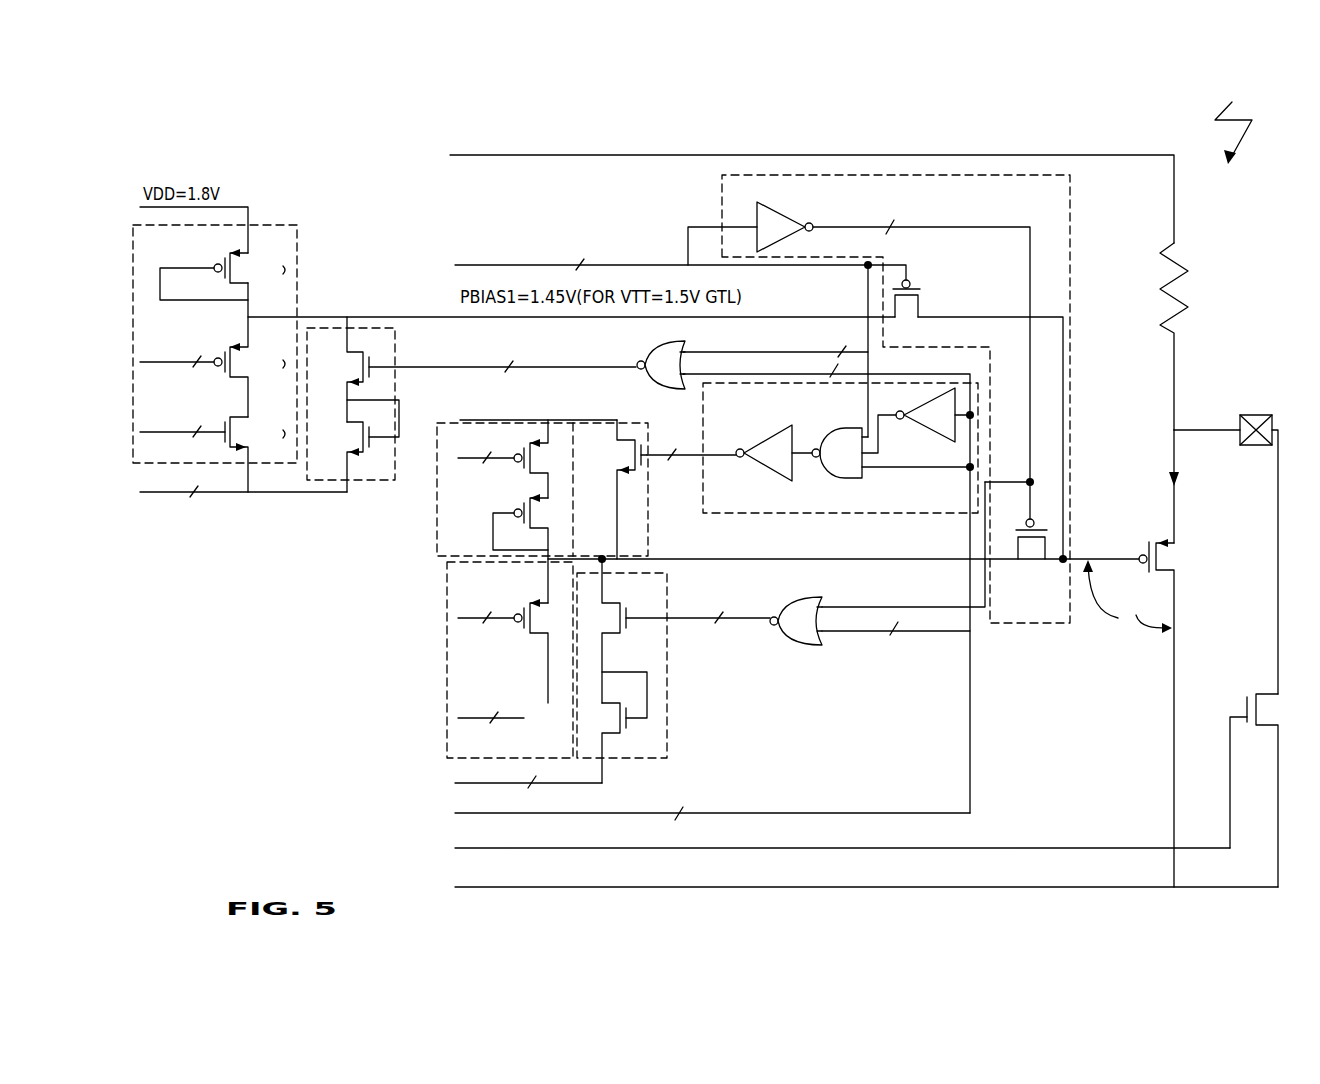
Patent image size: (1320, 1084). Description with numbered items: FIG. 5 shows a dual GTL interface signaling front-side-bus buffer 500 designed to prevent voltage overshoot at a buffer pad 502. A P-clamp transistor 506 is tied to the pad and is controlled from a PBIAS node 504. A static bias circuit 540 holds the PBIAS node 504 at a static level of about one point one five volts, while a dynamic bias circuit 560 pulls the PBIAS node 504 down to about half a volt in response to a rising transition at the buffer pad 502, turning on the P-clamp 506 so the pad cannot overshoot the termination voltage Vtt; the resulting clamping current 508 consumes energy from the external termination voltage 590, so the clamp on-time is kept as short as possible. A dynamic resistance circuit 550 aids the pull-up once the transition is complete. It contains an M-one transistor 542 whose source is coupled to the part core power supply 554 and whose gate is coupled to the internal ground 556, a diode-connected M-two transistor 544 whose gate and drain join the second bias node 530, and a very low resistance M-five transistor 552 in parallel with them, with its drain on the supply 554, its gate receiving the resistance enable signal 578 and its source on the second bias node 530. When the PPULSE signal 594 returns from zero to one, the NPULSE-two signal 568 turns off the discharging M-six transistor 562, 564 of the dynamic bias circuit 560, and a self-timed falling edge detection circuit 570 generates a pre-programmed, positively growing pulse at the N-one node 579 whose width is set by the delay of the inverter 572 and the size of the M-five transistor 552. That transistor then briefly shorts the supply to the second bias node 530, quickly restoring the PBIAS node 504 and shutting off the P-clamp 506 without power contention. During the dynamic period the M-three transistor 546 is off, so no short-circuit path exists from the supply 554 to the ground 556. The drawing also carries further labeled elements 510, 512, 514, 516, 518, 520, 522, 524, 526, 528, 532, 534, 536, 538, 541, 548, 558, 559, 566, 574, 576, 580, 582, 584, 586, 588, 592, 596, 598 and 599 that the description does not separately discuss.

The dual GTL interface signaling FSB buffer 500 is at (1241, 125).
The buffer pad 502 is at (1250, 414).
The PBIAS node 504 is at (1072, 526).
The M10 P-clamp 506 is at (1184, 707).
The clamping current 508 is at (1183, 486).
The bias generator block 510 is at (298, 228).
The transistor M12 512 is at (227, 276).
The transistor M13 514 is at (254, 350).
The transistor M14 516 is at (259, 454).
The VDD supply line 518 is at (247, 212).
The current mirror block 520 is at (352, 326).
The VBIAS input 522 is at (177, 364).
The EN input 524 is at (182, 434).
The VSS line 526 is at (243, 496).
The LVOTL signal line 528 is at (661, 297).
The PBIAS2 node 530 is at (600, 553).
The PBIAS1 line 532 is at (324, 326).
The NPULSE1 line 534 is at (502, 370).
The transistor M16 536 is at (352, 369).
The transistor M17 538 is at (359, 446).
The static bias circuit 540 is at (446, 662).
The transistor M2 541 is at (544, 534).
The M1 transistor 542 is at (542, 479).
The M2 transistor 544 is at (1114, 620).
The M3 transistor 546 is at (542, 640).
The node between M3 and M4 548 is at (542, 702).
The dynamic resistance circuit 550 is at (636, 490).
The M5 transistor 552 is at (610, 478).
The part core power supply (VDD) 554 is at (542, 420).
The internal ground (VSS) 556 is at (528, 617).
The VBIAS/NOR1 input line 558 is at (714, 583).
The NOR1 gate 559 is at (661, 376).
The dynamic bias circuit 560 is at (670, 688).
The M6 transistor 562 is at (608, 636).
The M6 transistor 564 is at (615, 736).
The EN input / NOR2 gate 566 is at (646, 673).
The NPULSE2 signal 568 is at (698, 621).
The falling edge detection circuit 570 is at (988, 420).
The inverter INV3 572 is at (895, 432).
The NAND3 gate 574 is at (881, 383).
The inverter INV2 576 is at (764, 444).
The resistance enable (EN) signal 578 is at (620, 488).
The N1 node 579 is at (691, 435).
The control block 580 is at (1068, 212).
The inverter INV1 582 is at (778, 190).
The transistor M8 584 is at (920, 302).
The transistor M8 586 is at (1032, 557).
The INV1 output line 588 is at (921, 355).
The external termination voltage (EXT VTT) 590 is at (540, 128).
The external termination resistor EXT RTT 592 is at (1226, 297).
The PPULSE signal 594 is at (712, 721).
The IOVSS line 596 is at (515, 874).
The DATA line 598 is at (508, 838).
The transistor M11 599 is at (1252, 790).